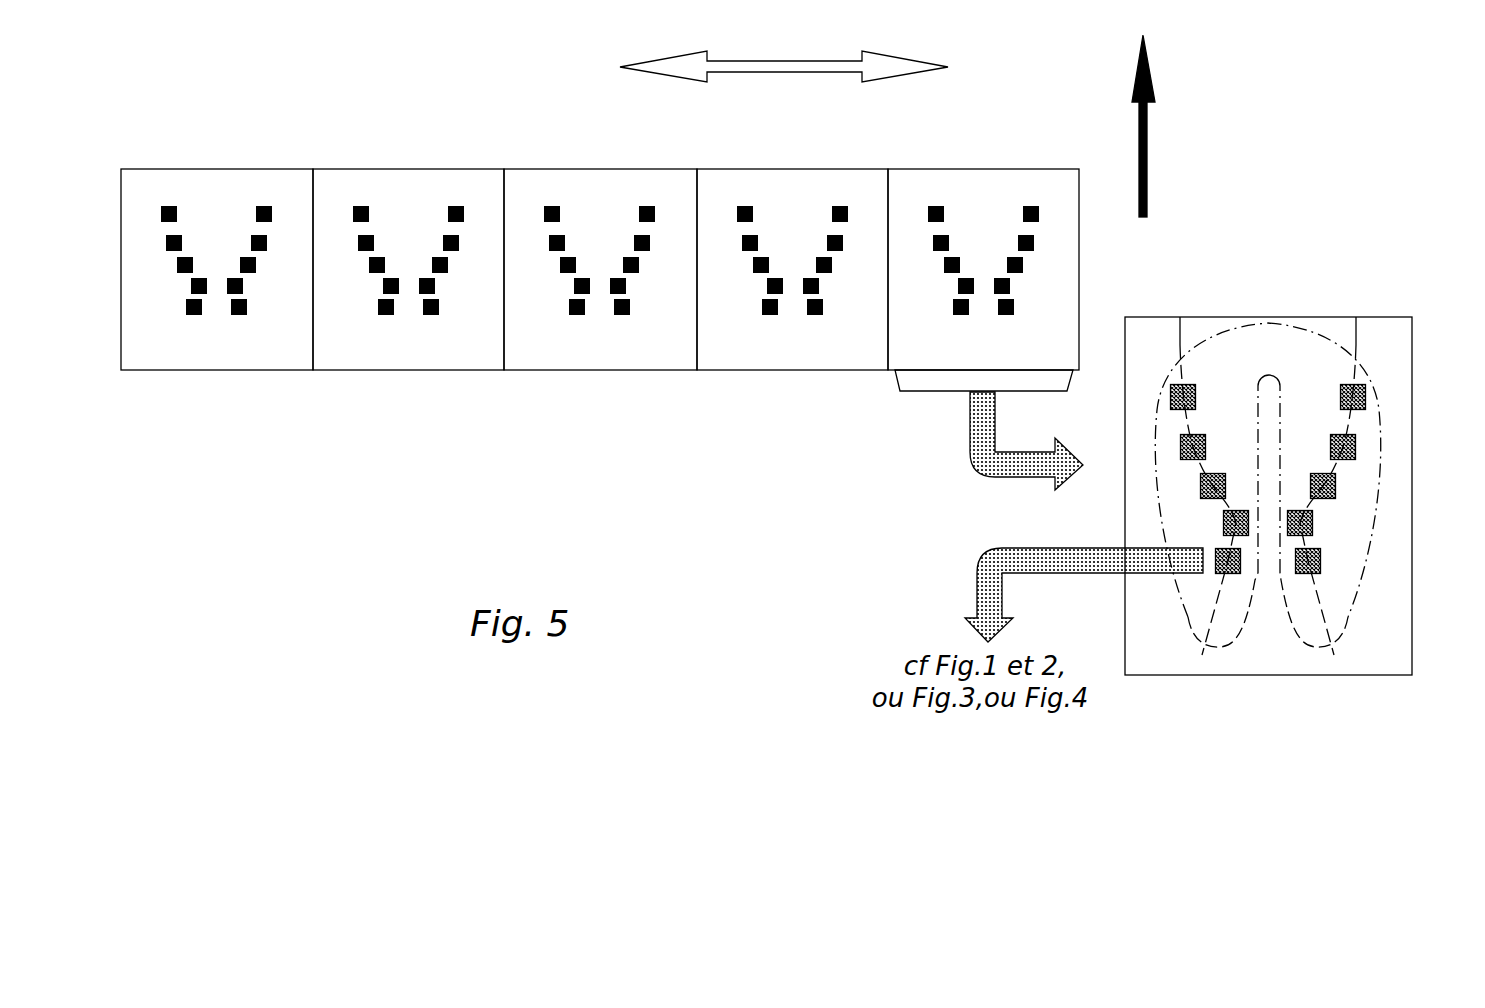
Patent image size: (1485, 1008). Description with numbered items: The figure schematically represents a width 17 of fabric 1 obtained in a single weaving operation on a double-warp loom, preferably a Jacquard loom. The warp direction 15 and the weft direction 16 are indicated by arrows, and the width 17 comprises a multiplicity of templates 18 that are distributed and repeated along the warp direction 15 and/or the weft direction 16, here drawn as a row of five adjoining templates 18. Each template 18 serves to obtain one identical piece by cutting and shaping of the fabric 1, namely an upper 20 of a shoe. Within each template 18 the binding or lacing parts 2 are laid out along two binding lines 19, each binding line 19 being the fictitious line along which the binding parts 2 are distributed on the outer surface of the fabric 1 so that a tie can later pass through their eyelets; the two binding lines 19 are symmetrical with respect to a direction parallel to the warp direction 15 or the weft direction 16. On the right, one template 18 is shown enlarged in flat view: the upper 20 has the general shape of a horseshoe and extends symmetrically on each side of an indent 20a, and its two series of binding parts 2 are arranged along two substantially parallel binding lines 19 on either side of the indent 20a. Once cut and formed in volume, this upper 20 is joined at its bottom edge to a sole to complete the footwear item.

The fabric 1 is at (700, 235).
The binding parts 2 is at (166, 242).
The warp direction 15 is at (1148, 147).
The weft direction 16 is at (778, 68).
The width of fabric 17 is at (700, 235).
The template 18 is at (213, 203).
The binding line 19 is at (1190, 332).
The upper 20 is at (1382, 472).
The indent 20a is at (1280, 434).